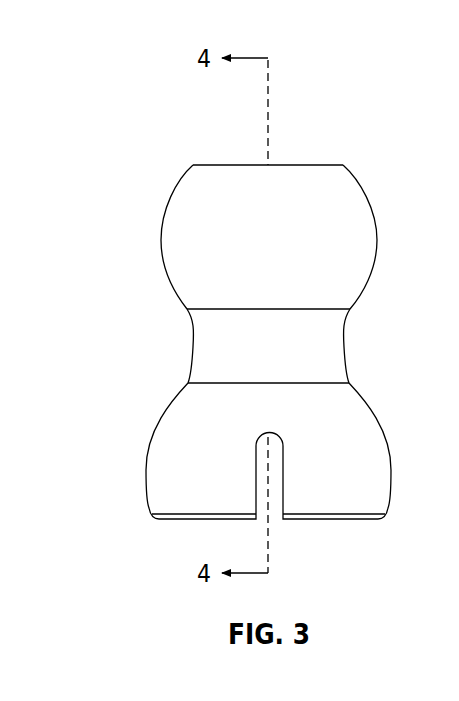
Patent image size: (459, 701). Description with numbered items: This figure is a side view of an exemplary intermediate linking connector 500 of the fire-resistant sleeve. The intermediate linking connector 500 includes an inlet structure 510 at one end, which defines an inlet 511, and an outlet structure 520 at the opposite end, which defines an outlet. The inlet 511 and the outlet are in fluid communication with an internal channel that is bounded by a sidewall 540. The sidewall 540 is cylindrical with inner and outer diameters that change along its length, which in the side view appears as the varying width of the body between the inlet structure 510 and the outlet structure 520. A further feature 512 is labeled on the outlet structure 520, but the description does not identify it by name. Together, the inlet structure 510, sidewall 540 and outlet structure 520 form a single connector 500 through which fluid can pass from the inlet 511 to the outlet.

The intermediate linking connector 500 is at (130, 46).
The inlet structure 510 is at (138, 449).
The inlet 511 is at (335, 520).
The top edge 512 is at (307, 164).
The outlet structure 520 is at (157, 176).
The sidewall 540 is at (163, 265).